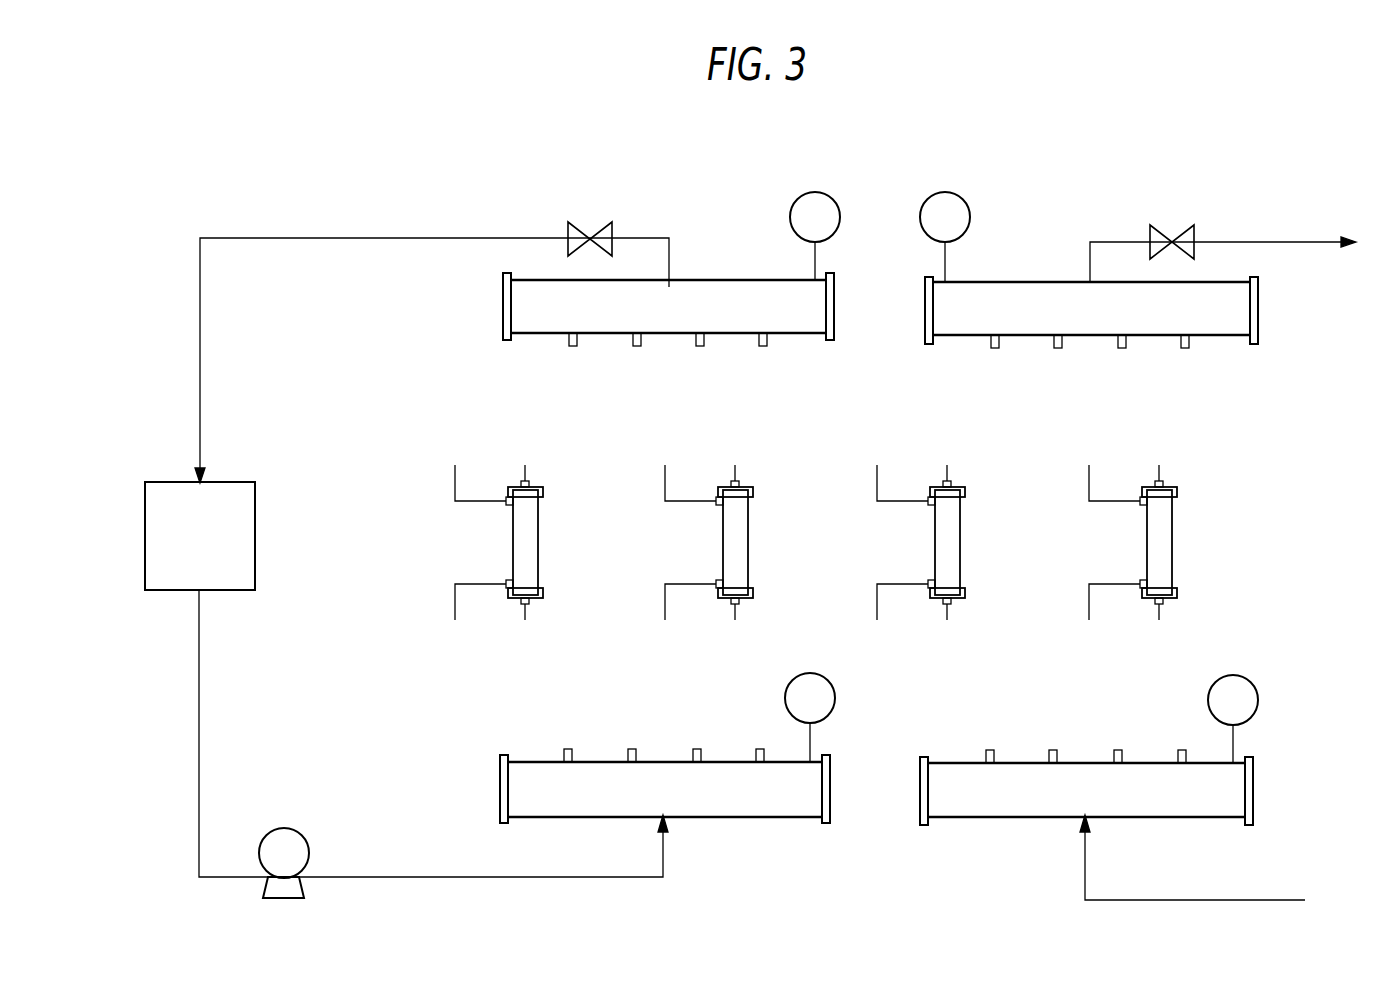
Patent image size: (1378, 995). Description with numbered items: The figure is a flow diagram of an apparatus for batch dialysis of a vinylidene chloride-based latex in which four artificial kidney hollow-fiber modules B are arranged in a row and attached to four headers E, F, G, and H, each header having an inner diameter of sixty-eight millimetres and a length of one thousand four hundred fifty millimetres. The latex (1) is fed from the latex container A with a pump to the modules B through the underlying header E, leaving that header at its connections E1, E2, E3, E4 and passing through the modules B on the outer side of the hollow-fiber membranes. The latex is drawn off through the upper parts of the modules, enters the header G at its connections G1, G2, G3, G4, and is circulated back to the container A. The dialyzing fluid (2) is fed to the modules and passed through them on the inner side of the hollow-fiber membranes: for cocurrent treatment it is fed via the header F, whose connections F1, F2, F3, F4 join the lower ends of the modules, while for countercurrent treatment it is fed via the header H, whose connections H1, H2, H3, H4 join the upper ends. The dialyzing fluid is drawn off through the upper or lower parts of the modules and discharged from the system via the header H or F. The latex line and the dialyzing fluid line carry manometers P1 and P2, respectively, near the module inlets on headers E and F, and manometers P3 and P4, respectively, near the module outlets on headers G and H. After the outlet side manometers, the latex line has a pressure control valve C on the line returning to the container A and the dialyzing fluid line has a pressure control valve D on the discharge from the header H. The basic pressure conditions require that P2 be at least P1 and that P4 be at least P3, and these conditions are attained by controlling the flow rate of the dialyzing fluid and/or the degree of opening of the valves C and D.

The latex container A is at (200, 536).
The artificial kidney hollow-fiber module B is at (815, 544).
The pressure control valve C is at (590, 224).
The pressure control valve D is at (1172, 227).
The header E is at (665, 769).
The header F is at (1086, 770).
The header G is at (668, 327).
The header H is at (1091, 330).
The manometer P1 is at (828, 717).
The manometer P2 is at (1252, 719).
The manometer P3 is at (798, 234).
The manometer P4 is at (962, 235).
The latex 1 is at (433, 733).
The dialyzing fluid 2 is at (1209, 857).
The header G port G1 is at (573, 357).
The header G port G2 is at (637, 357).
The header G port G3 is at (700, 357).
The header G port G4 is at (763, 357).
The header H port H1 is at (995, 359).
The header H port H2 is at (1058, 359).
The header H port H3 is at (1122, 359).
The header H port H4 is at (1185, 359).
The header E port E1 is at (567, 738).
The header E port E2 is at (631, 738).
The header E port E3 is at (696, 738).
The header E port E4 is at (759, 738).
The header F port F1 is at (990, 739).
The header F port F2 is at (1053, 739).
The header F port F3 is at (1118, 739).
The header F port F4 is at (1182, 739).